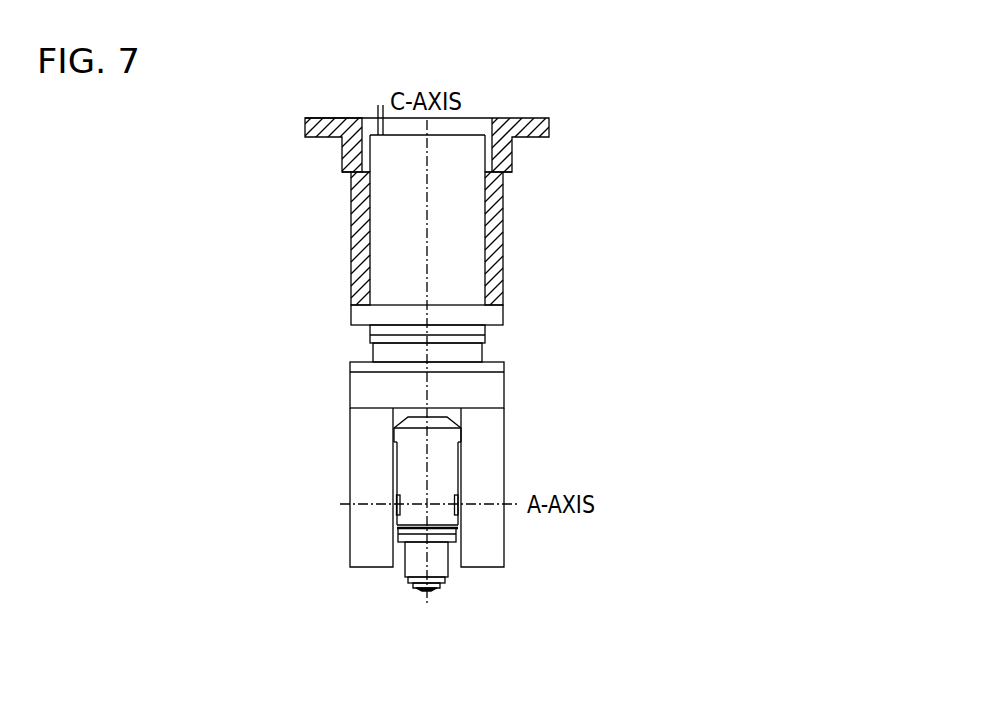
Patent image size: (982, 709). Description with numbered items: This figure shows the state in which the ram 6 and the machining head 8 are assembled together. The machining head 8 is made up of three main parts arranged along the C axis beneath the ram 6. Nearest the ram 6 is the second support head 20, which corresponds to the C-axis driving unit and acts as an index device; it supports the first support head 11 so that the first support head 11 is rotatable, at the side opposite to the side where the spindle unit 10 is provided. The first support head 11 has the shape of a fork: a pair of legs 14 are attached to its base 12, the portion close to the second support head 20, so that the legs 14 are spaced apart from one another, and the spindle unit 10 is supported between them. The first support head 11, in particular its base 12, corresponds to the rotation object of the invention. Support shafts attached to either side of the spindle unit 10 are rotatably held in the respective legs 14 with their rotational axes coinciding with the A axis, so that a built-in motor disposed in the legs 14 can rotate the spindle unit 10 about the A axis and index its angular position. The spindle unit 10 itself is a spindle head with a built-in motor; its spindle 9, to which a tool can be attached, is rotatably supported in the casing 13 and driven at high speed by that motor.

The ram 6 is at (386, 123).
The machining head 8 is at (461, 377).
The second support head 20 is at (585, 248).
The base 12 is at (459, 379).
The first support head 11 is at (572, 459).
The legs 14 is at (428, 487).
The spindle unit 10 is at (514, 512).
The casing 13 is at (379, 428).
The spindle 9 is at (502, 578).